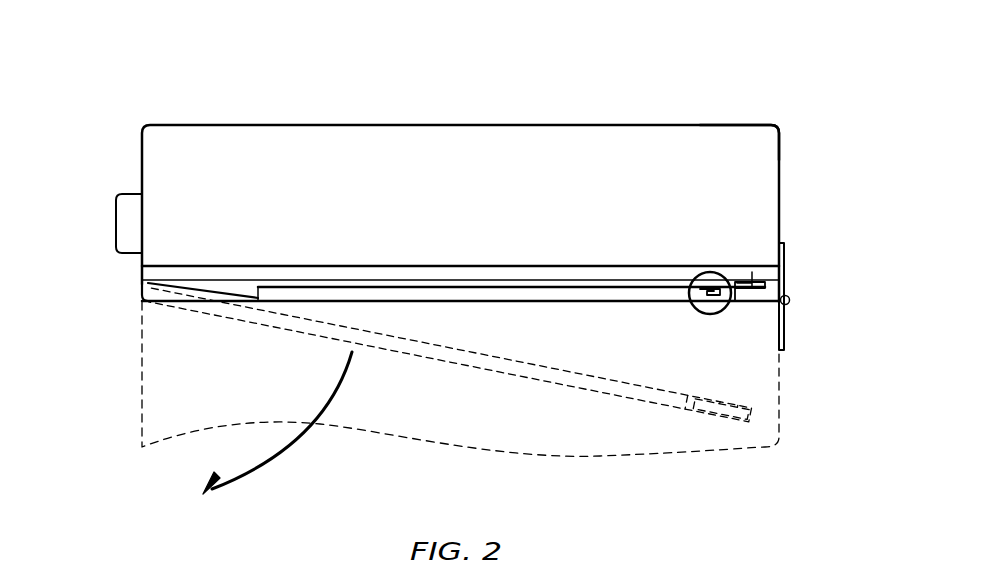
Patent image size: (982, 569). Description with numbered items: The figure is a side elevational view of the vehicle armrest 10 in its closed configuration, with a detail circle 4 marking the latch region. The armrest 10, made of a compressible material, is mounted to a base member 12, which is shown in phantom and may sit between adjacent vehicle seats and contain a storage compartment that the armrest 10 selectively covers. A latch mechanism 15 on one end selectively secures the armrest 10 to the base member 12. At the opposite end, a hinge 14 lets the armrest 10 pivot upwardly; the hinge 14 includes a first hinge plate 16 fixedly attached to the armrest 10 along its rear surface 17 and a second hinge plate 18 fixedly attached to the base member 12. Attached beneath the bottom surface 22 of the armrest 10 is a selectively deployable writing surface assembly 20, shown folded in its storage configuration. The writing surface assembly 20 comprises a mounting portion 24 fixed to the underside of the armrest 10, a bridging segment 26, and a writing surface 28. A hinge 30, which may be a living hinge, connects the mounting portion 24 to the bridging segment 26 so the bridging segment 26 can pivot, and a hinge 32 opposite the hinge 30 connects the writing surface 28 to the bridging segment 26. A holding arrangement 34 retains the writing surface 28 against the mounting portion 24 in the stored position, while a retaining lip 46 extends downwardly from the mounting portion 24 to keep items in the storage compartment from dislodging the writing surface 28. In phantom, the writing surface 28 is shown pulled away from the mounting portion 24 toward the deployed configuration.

The detail circle for FIG. 4 is at (697, 276).
The vehicle armrest 10 is at (676, 88).
The base member 12 is at (598, 447).
The hinge 14 is at (808, 249).
The latch mechanism 15 is at (112, 221).
The first hinge plate 16 is at (790, 248).
The rear surface 17 is at (783, 157).
The second hinge plate 18 is at (787, 338).
The writing surface assembly 20 is at (458, 307).
The bottom surface 22 is at (219, 266).
The mounting portion 24 is at (752, 278).
The bridging segment 26 is at (158, 300).
The writing surface 28 is at (560, 303).
The hinge 30 is at (142, 283).
The hinge 32 is at (259, 302).
The holding arrangement 34 is at (742, 311).
The retaining lip 46 is at (769, 286).